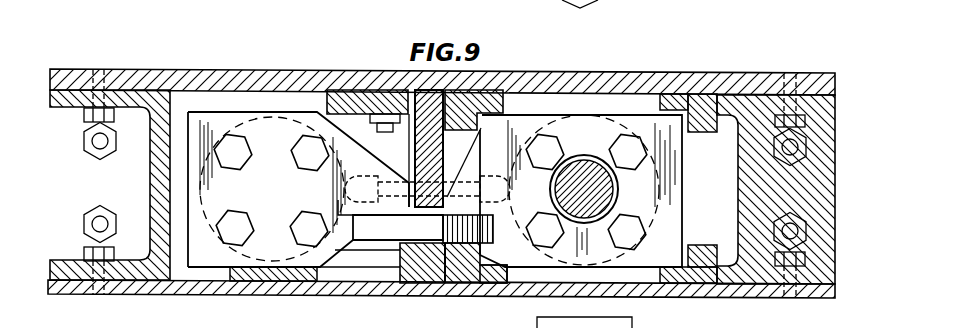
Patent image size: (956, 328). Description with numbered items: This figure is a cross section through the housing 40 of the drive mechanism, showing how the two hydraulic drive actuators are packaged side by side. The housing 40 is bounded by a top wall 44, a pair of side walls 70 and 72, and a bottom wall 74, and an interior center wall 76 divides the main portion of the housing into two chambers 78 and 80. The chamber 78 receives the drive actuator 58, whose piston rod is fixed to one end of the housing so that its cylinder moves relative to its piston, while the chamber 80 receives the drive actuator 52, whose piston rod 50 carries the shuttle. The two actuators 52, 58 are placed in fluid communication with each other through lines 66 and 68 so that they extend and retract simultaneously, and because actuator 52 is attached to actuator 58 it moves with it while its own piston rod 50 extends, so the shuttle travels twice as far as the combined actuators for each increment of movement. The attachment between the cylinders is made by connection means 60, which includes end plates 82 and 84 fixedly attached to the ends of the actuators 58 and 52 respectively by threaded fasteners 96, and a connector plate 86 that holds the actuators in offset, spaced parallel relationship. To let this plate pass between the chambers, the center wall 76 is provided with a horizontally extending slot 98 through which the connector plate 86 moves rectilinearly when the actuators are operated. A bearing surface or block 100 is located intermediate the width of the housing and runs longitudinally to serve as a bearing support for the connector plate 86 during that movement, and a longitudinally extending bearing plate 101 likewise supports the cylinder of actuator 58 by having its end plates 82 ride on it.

The housing 40 is at (442, 50).
The top wall 44 is at (225, 76).
The piston rod 50 is at (584, 190).
The drive actuator 52 is at (645, 190).
The drive actuator 58 is at (212, 178).
The connection means 60 is at (449, 240).
The fluid line 66 is at (391, 176).
The fluid line 68 is at (496, 175).
The side wall 70 is at (152, 200).
The side wall 72 is at (738, 203).
The bottom wall 74 is at (74, 286).
The interior center wall 76 is at (440, 151).
The chamber 78 is at (278, 100).
The chamber 80 is at (613, 103).
The end plate 82 is at (333, 251).
The end plate 84 is at (539, 118).
The connector plate 86 is at (432, 226).
The threaded fasteners 96 is at (297, 222).
The horizontally extending slot 98 is at (422, 212).
The bearing surface or block 100 is at (513, 267).
The bearing plate 101 is at (278, 266).